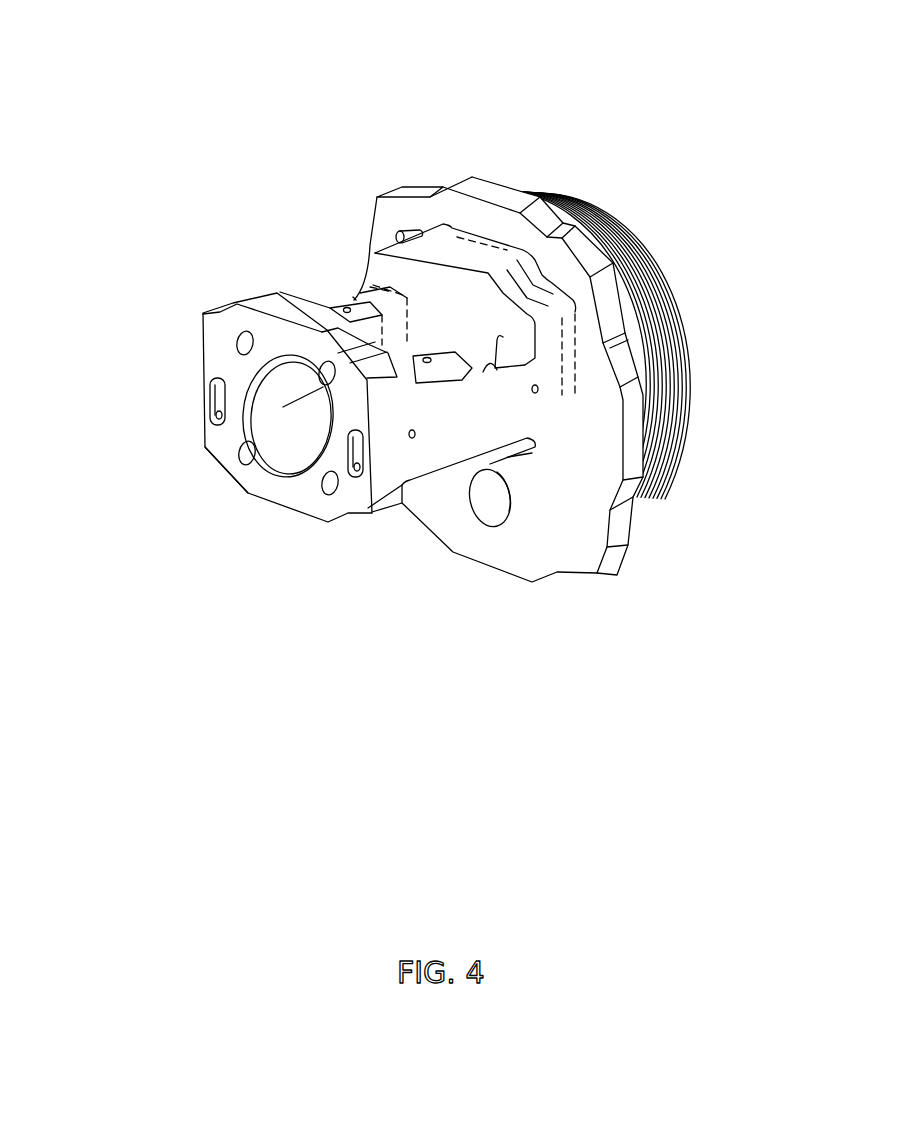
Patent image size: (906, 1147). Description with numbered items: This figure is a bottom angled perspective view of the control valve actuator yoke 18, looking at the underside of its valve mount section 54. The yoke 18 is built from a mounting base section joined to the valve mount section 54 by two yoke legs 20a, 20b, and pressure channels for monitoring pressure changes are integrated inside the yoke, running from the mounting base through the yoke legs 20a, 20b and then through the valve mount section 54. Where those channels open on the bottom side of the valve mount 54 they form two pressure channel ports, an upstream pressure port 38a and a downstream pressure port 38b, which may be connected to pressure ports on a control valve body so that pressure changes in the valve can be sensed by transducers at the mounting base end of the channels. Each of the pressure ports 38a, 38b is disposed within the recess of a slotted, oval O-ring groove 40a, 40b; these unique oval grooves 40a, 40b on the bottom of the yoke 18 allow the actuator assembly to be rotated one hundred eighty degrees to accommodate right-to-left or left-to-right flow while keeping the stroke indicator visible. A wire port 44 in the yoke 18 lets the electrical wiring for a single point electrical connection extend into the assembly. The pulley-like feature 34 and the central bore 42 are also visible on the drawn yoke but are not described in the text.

The yoke 18 is at (210, 72).
The yoke leg 20a is at (354, 300).
The yoke leg 20b is at (465, 410).
The pulley 34 is at (607, 223).
The shaft bore 42 is at (273, 387).
The slotted o-ring groove 40a is at (207, 403).
The slotted o-ring groove 40b is at (350, 447).
The upstream pressure port 38a is at (214, 420).
The downstream pressure port 38b is at (353, 465).
The valve mount section 54 is at (220, 447).
The wire port 44 is at (490, 505).